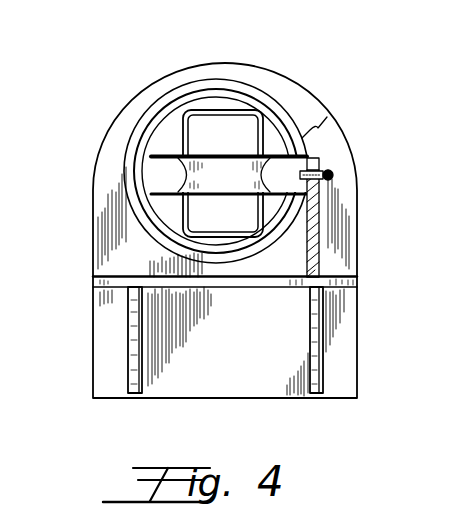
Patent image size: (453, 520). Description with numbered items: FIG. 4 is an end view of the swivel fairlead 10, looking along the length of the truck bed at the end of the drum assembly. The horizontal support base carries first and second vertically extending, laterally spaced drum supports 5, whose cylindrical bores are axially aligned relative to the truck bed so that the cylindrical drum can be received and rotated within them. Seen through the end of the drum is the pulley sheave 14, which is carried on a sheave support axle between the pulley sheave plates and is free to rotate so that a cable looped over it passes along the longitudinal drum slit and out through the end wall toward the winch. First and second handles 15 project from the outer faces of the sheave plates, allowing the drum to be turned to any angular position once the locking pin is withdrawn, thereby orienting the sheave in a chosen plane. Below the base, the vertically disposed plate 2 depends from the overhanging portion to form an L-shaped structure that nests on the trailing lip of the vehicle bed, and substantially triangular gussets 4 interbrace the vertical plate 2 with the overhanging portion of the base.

The swivel fairlead 10 is at (340, 101).
The drum supports 5 is at (93, 196).
The handles 15 is at (207, 110).
The pulley sheave 14 is at (183, 178).
The vertical plate 2 is at (193, 390).
The gusset 4 is at (133, 371).